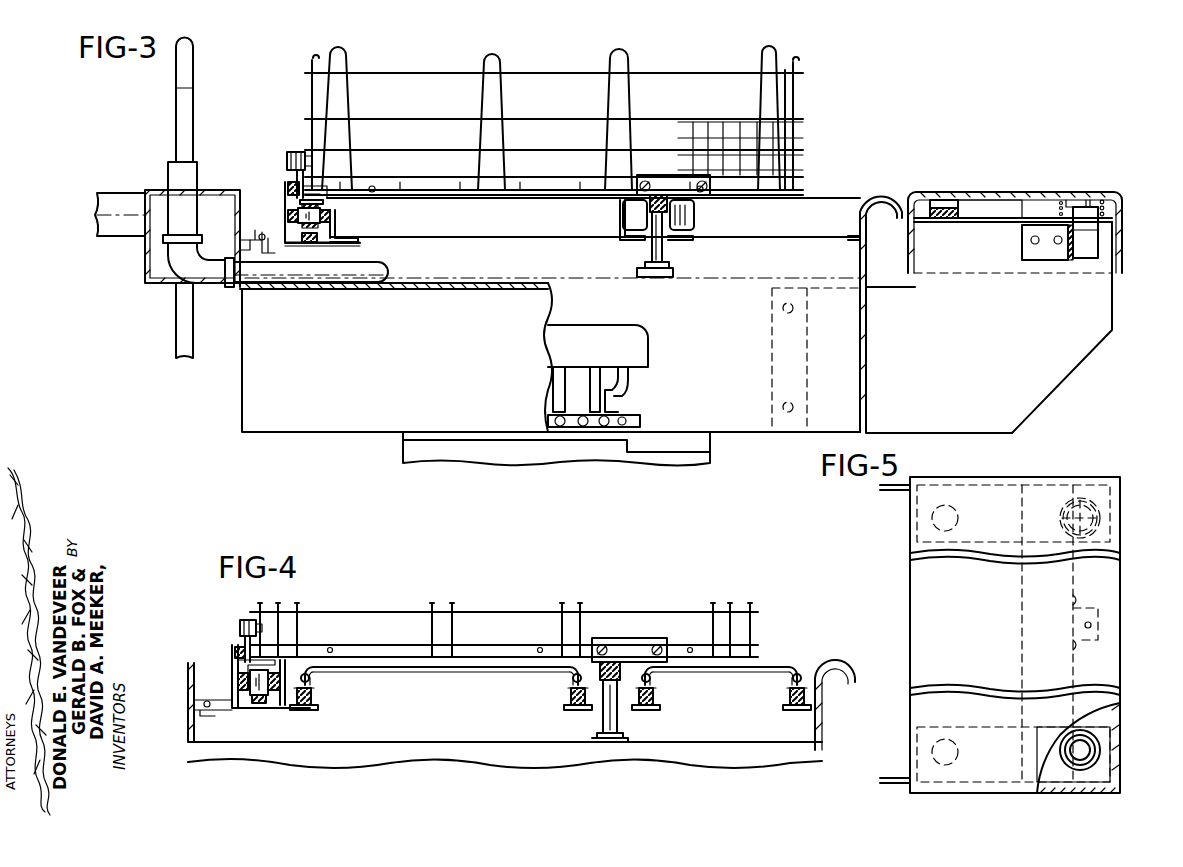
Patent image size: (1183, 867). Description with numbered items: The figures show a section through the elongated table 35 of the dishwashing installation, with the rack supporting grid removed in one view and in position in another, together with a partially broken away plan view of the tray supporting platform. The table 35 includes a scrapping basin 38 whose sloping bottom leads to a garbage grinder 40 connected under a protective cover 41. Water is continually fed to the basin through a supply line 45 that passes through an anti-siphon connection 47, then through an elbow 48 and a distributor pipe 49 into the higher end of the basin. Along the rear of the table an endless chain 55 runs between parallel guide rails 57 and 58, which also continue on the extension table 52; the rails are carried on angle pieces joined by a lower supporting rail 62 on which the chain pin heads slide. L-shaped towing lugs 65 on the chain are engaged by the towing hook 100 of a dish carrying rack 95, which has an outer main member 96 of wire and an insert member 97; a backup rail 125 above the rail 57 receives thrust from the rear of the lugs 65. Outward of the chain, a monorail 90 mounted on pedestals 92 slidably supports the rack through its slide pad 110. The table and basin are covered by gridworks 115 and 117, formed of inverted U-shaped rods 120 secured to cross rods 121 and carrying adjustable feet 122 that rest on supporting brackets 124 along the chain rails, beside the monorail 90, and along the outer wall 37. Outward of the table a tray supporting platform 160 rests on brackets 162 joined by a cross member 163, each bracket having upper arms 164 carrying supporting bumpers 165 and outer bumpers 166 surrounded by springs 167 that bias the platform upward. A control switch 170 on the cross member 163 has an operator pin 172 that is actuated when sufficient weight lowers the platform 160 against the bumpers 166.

In FIG. 3, the table 35 is at (853, 190).
In FIG. 4, the table 35 is at (832, 672).
In FIG. 3, the outer wall 37 is at (866, 300).
In FIG. 4, the outer wall 37 is at (824, 704).
In FIG. 3, the scrapping basin 38 is at (456, 367).
In FIG. 3, the garbage grinder 40 is at (600, 462).
In FIG. 3, the protective cover 41 is at (640, 345).
In FIG. 3, the supply line 45 is at (176, 104).
In FIG. 3, the anti-siphon connection 47 is at (170, 180).
In FIG. 3, the elbow 48 is at (208, 285).
In FIG. 3, the distributor pipe 49 is at (325, 284).
In FIG. 3, the extension table 52 is at (96, 205).
In FIG. 3, the endless chain 55 is at (336, 215).
In FIG. 4, the endless chain 55 is at (252, 690).
In FIG. 4, the guide rail 57 is at (240, 678).
In FIG. 4, the guide rail 58 is at (280, 692).
In FIG. 3, the lower supporting rail 62 is at (306, 243).
In FIG. 3, the towing lug 65 is at (296, 188).
In FIG. 4, the towing lug 65 is at (238, 650).
In FIG. 3, the monorail 90 is at (690, 210).
In FIG. 4, the monorail 90 is at (606, 664).
In FIG. 3, the pedestal 92 is at (664, 252).
In FIG. 4, the pedestal 92 is at (610, 725).
In FIG. 3, the dish carrying rack 95 is at (416, 58).
In FIG. 4, the dish carrying rack 95 is at (682, 606).
In FIG. 3, the outer main member 96 is at (786, 108).
In FIG. 3, the insert member 97 is at (720, 132).
In FIG. 3, the towing hook 100 is at (290, 160).
In FIG. 4, the towing hook 100 is at (242, 622).
In FIG. 3, the slide pad 110 is at (636, 190).
In FIG. 4, the slide pad 110 is at (640, 640).
In FIG. 4, the gridwork 115 is at (405, 672).
In FIG. 4, the gridwork 117 is at (718, 672).
In FIG. 4, the inverted U-shaped rod 120 is at (455, 672).
In FIG. 4, the cross rod 121 is at (310, 679).
In FIG. 4, the adjustable foot 122 is at (310, 700).
In FIG. 3, the supporting bracket 124 is at (352, 242).
In FIG. 4, the supporting bracket 124 is at (303, 710).
In FIG. 3, the backup rail 125 is at (285, 186).
In FIG. 3, the supporting platform 160 is at (1026, 192).
In FIG. 5, the supporting platform 160 is at (914, 582).
In FIG. 3, the bracket 162 is at (1088, 338).
In FIG. 5, the bracket 162 is at (890, 490).
In FIG. 3, the cross member 163 is at (1045, 262).
In FIG. 5, the cross member 163 is at (1022, 626).
In FIG. 3, the upper arm 164 is at (978, 224).
In FIG. 5, the upper arm 164 is at (1003, 486).
In FIG. 3, the supporting bumper 165 is at (945, 200).
In FIG. 5, the supporting bumper 165 is at (933, 520).
In FIG. 3, the bumper 166 is at (1064, 200).
In FIG. 5, the bumper 166 is at (1081, 498).
In FIG. 3, the spring 167 is at (1104, 202).
In FIG. 5, the spring 167 is at (1100, 518).
In FIG. 3, the control switch 170 is at (1090, 226).
In FIG. 5, the control switch 170 is at (1098, 622).
In FIG. 3, the operator pin 172 is at (1090, 200).
In FIG. 5, the operator pin 172 is at (1098, 636).